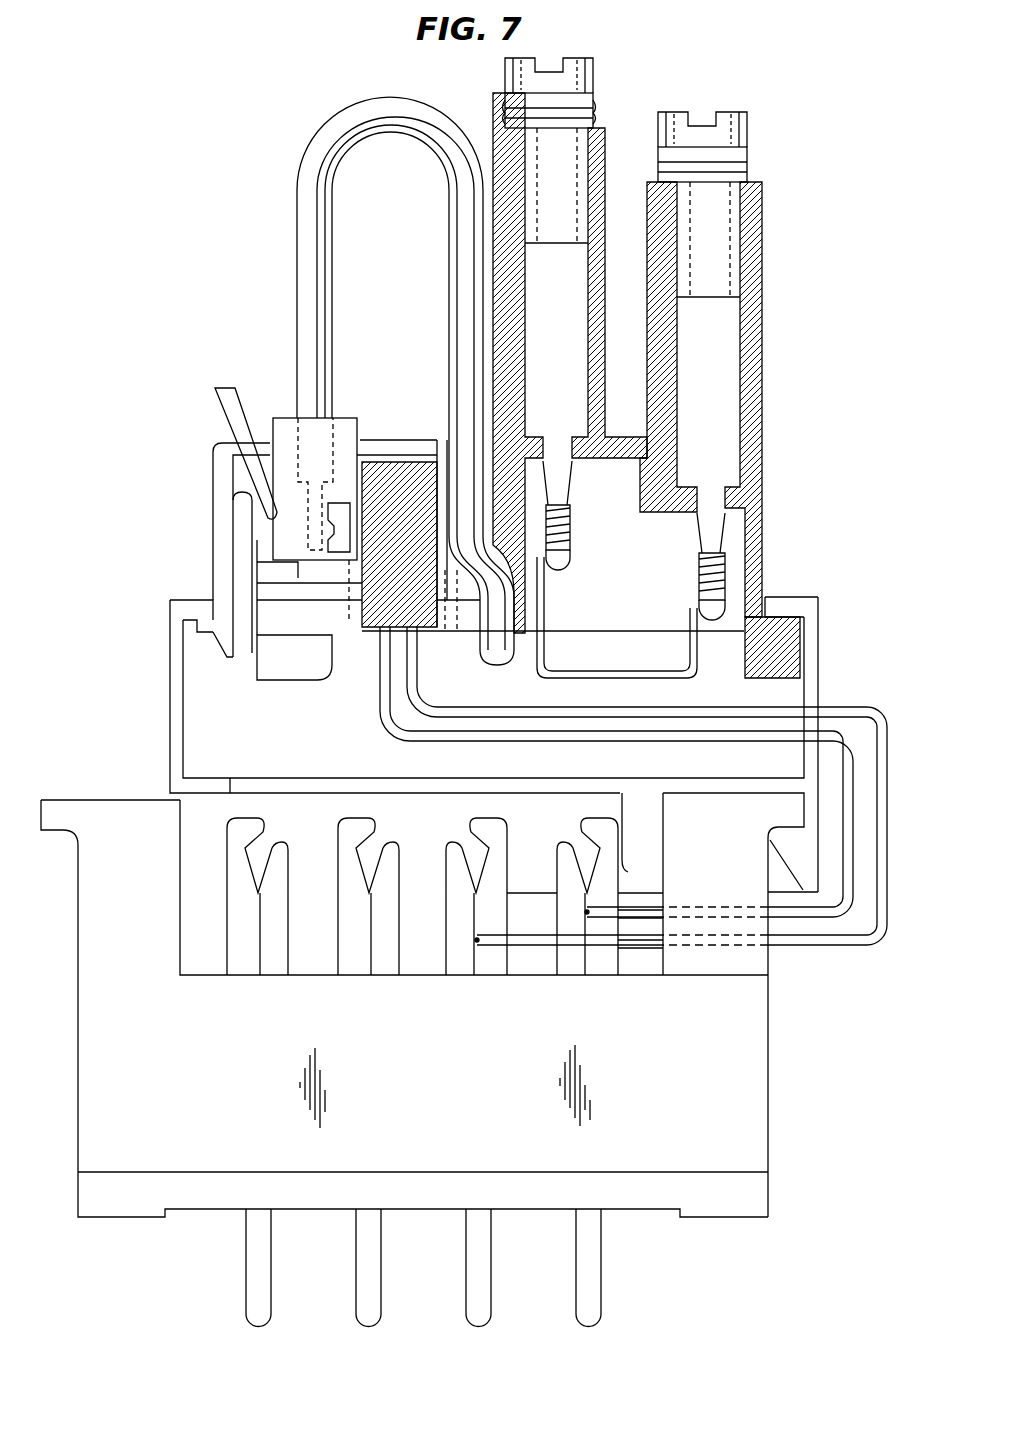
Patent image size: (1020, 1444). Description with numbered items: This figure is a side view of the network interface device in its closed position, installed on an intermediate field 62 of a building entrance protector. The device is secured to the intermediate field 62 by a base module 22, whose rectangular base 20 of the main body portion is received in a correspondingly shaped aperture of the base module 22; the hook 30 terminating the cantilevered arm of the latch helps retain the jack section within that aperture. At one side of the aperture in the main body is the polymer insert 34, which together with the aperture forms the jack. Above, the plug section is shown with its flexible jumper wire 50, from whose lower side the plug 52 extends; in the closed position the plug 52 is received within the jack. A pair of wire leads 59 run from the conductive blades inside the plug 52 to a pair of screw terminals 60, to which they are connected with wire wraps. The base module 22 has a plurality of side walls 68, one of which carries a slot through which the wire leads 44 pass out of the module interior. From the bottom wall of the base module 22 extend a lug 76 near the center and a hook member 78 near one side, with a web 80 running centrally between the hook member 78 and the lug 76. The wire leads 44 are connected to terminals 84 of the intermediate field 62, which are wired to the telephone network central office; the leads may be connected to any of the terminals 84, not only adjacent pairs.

The rectangular base 20 is at (763, 567).
The base module 22 is at (812, 658).
The hook 30 is at (207, 638).
The insert 34 is at (385, 595).
The wire leads 44 is at (845, 711).
The flexible jumper wire 50 is at (340, 128).
The plug 52 is at (343, 418).
The wire leads 59 is at (568, 674).
The screw terminals 60 is at (588, 72).
The intermediate field 62 is at (456, 1099).
The side walls 68 is at (175, 704).
The lug 76 is at (535, 880).
The hook member 78 is at (807, 873).
The web 80 is at (653, 858).
The terminals 84 is at (245, 963).